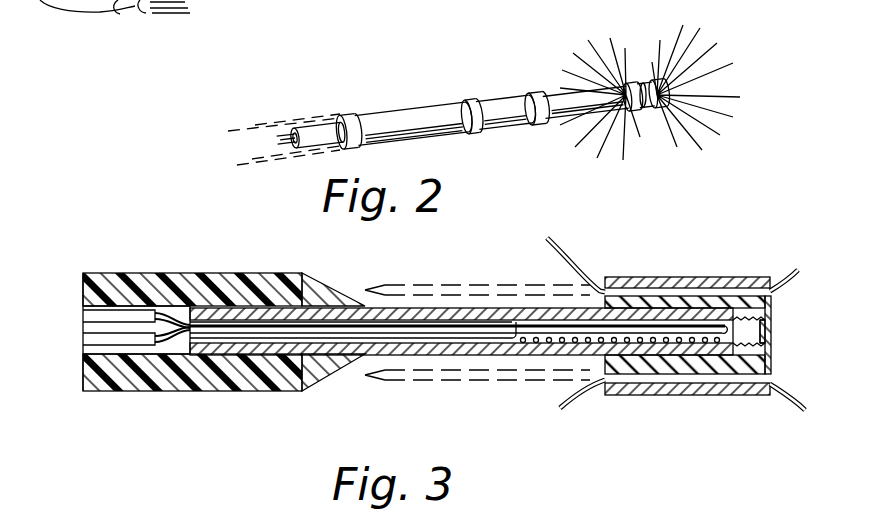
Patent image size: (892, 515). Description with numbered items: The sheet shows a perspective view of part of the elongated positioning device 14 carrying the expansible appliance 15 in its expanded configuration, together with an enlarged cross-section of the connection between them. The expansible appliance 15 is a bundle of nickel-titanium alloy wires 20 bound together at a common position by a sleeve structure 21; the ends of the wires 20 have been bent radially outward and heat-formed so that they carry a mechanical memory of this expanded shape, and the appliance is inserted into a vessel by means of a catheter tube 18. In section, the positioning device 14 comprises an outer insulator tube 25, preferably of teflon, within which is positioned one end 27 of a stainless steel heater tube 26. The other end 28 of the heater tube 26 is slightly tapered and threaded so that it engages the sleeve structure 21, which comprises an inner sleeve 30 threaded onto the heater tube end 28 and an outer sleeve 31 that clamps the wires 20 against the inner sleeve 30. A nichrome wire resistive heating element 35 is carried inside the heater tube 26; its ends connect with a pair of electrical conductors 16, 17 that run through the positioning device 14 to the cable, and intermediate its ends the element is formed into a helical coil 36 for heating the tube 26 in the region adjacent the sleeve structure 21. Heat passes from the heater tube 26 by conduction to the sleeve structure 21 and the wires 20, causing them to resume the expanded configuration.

In FIG. 2, the positioning device 14 is at (506, 112).
In FIG. 3, the positioning device 14 is at (127, 273).
In FIG. 2, the expansible appliance 15 is at (632, 36).
In FIG. 3, the electrical conductor 16 is at (88, 316).
In FIG. 3, the electrical conductor 17 is at (90, 338).
In FIG. 2, the catheter tube 18 is at (512, 173).
In FIG. 2, the wires 20 is at (723, 63).
In FIG. 3, the wires 20 is at (556, 245).
In FIG. 2, the sleeve structure 21 is at (646, 94).
In FIG. 3, the sleeve structure 21 is at (707, 250).
In FIG. 3, the outer insulator tube 25 is at (258, 378).
In FIG. 3, the heater tube 26 is at (423, 350).
In FIG. 3, the one end of heater tube 27 is at (245, 307).
In FIG. 3, the other end of heater tube 28 is at (745, 356).
In FIG. 3, the inner sleeve 30 is at (772, 310).
In FIG. 3, the outer sleeve 31 is at (750, 277).
In FIG. 3, the resistive heating element 35 is at (413, 328).
In FIG. 3, the helical coil 36 is at (633, 310).